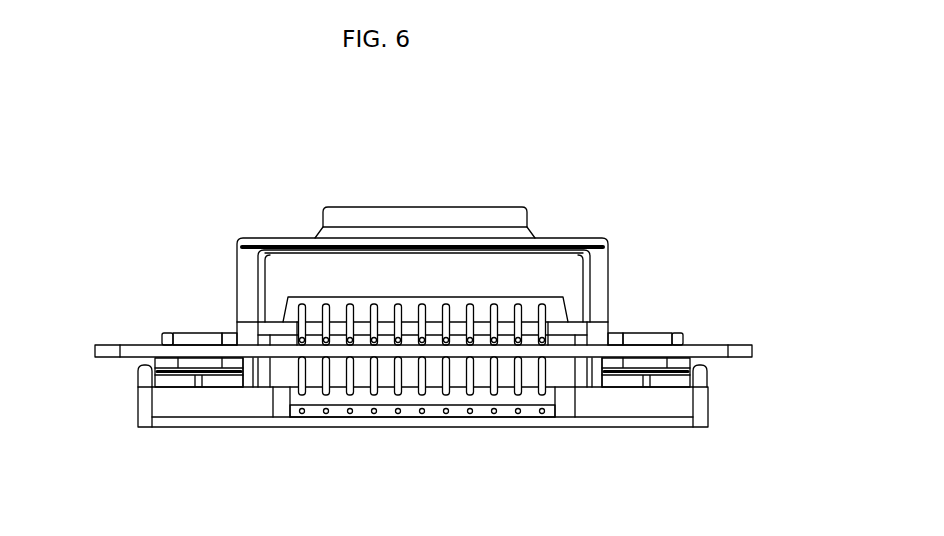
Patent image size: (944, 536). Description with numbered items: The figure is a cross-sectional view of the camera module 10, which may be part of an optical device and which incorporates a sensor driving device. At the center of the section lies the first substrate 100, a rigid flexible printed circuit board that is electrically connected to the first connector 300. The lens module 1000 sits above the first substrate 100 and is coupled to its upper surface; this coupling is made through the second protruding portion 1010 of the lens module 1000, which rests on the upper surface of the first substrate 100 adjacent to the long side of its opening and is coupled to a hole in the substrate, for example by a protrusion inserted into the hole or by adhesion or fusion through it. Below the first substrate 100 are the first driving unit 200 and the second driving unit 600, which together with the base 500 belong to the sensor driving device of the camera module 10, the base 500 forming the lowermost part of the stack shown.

The camera module 10 is at (812, 155).
The first substrate 100 is at (760, 340).
The first driving unit 200 is at (683, 362).
The first connector 300 is at (553, 305).
The base 500 is at (683, 403).
The second driving unit 600 is at (683, 388).
The lens module 1000 is at (253, 238).
The second protruding portion 1010 is at (162, 332).